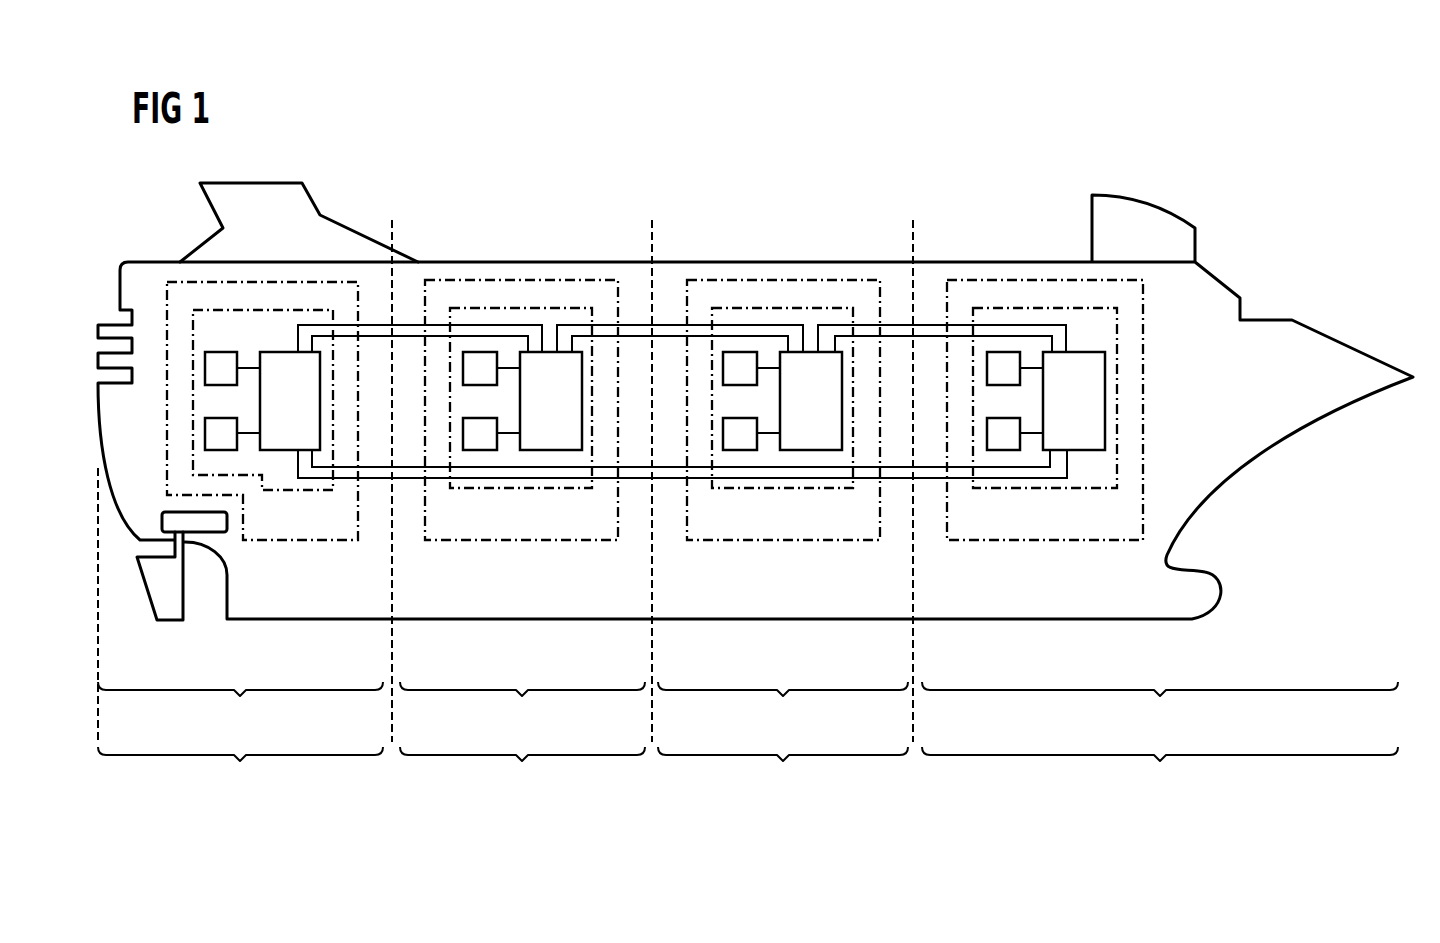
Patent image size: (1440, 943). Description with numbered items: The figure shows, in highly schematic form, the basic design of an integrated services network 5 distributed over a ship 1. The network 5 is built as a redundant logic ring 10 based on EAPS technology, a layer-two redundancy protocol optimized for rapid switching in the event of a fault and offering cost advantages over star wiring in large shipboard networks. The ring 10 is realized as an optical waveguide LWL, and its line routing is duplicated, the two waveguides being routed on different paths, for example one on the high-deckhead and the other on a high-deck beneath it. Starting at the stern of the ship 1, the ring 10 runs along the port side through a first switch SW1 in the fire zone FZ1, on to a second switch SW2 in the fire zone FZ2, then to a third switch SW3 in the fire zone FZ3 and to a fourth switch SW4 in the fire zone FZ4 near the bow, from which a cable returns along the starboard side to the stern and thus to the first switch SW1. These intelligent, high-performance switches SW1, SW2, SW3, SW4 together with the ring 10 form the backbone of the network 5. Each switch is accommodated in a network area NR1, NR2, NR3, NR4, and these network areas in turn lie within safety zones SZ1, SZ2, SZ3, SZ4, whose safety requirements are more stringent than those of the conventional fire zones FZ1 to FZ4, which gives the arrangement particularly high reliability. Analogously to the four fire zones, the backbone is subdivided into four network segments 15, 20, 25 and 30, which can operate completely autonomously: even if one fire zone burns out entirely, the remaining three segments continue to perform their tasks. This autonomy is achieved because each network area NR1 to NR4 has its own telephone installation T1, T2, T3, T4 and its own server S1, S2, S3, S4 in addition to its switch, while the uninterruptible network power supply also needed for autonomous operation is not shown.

The ship 1 is at (946, 260).
The integrated services network 5 is at (631, 324).
The redundant logic ring 10 is at (672, 333).
The optical waveguide LWL is at (673, 470).
The fire zone FZ1 is at (240, 708).
The fire zone FZ2 is at (522, 708).
The fire zone FZ3 is at (783, 708).
The fire zone FZ4 is at (1160, 708).
The network segment 15 is at (240, 771).
The network segment 20 is at (522, 771).
The network segment 25 is at (783, 771).
The network segment 30 is at (1160, 771).
The safety zone SZ1 is at (283, 542).
The safety zone SZ2 is at (500, 543).
The safety zone SZ3 is at (760, 543).
The safety zone SZ4 is at (1022, 543).
The network area NR1 is at (283, 492).
The network area NR2 is at (500, 491).
The network area NR3 is at (760, 491).
The network area NR4 is at (1023, 491).
The first switch SW1 is at (311, 413).
The second switch SW2 is at (572, 413).
The third switch SW3 is at (832, 413).
The fourth switch SW4 is at (1095, 413).
The telephone installation T1 is at (232, 381).
The telephone installation T2 is at (491, 381).
The telephone installation T3 is at (751, 381).
The telephone installation T4 is at (1014, 381).
The server S1 is at (232, 446).
The server S2 is at (491, 446).
The server S3 is at (751, 446).
The server S4 is at (1014, 446).